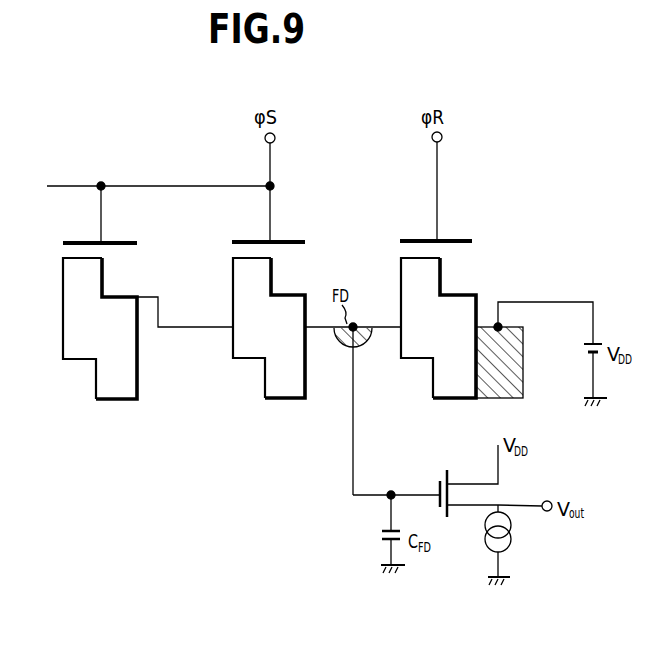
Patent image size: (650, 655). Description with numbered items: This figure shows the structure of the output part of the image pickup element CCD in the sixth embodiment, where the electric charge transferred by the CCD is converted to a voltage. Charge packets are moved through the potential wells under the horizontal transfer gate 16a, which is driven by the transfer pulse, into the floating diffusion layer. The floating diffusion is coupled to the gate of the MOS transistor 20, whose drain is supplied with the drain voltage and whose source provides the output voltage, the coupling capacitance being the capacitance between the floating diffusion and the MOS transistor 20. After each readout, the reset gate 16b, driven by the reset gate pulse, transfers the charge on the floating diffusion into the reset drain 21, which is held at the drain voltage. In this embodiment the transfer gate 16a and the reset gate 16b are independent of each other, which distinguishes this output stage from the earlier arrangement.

The transfer gate 16a is at (255, 237).
The reset gate 16b is at (462, 238).
The MOS transistor 20 is at (448, 478).
The reset drain 21 is at (488, 323).